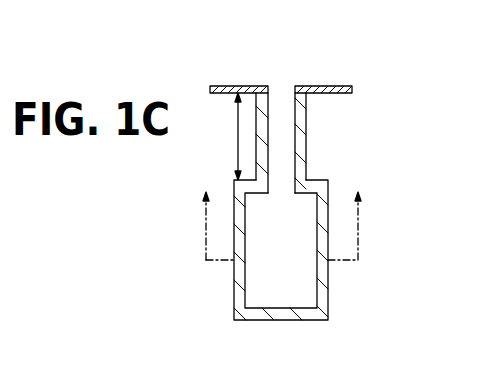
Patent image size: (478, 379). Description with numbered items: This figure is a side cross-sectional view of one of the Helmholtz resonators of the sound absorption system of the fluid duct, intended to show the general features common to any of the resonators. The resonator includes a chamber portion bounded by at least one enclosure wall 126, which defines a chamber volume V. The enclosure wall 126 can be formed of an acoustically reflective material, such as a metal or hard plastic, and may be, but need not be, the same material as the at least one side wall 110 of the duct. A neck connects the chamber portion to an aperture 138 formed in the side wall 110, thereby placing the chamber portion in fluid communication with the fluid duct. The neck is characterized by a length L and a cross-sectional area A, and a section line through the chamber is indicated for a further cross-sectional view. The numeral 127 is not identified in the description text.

The side wall 110 is at (331, 85).
The aperture 138 is at (283, 75).
The neck portion 127 is at (337, 137).
The enclosure wall 126 is at (224, 288).